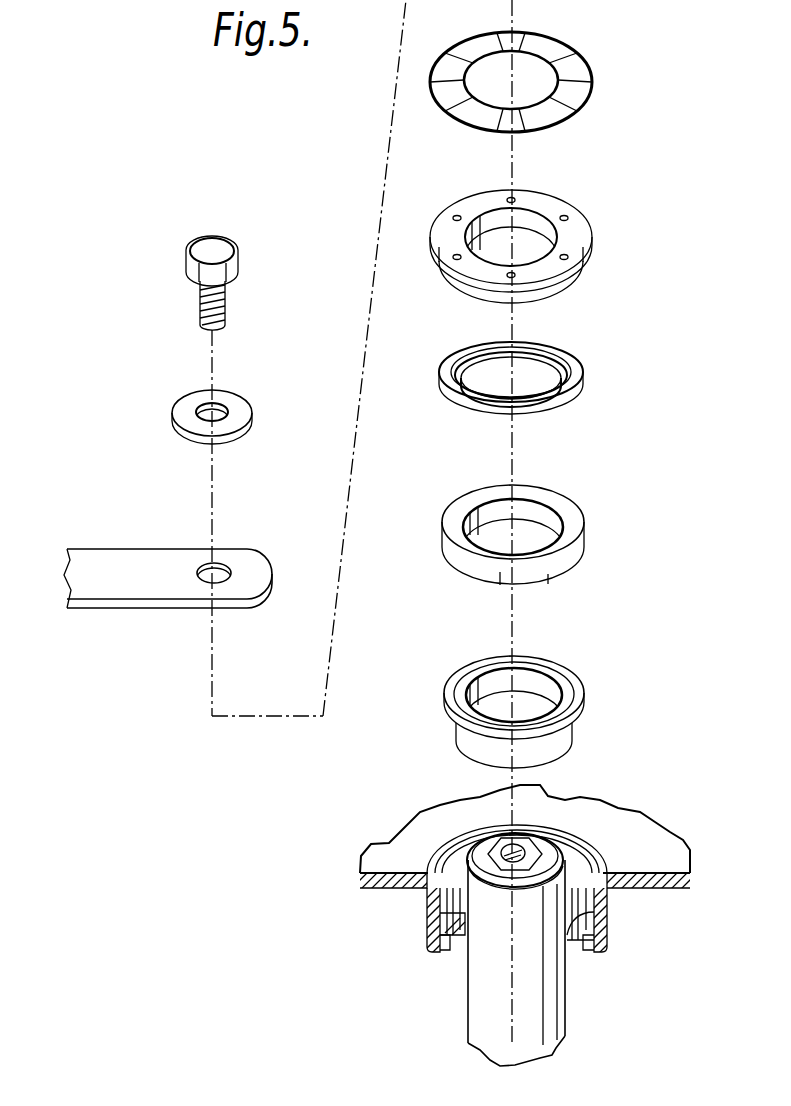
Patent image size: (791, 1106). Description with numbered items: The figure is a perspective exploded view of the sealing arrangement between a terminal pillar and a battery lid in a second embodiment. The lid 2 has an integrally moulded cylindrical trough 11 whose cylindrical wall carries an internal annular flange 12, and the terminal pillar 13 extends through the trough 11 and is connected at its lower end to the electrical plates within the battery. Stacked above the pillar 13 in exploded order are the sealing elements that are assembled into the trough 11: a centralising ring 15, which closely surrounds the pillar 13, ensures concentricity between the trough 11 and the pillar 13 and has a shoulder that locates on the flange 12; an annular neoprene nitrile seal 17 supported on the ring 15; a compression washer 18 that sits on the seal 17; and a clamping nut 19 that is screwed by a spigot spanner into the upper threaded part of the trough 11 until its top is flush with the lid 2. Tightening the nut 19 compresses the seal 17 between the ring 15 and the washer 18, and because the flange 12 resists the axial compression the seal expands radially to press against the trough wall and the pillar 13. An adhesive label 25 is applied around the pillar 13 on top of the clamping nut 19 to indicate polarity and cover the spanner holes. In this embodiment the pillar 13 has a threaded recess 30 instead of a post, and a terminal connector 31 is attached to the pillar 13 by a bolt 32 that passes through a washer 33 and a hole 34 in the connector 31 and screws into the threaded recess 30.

The lid 2 is at (413, 833).
The cylindrical trough 11 is at (427, 933).
The annular flange 12 is at (450, 947).
The terminal pillar 13 is at (556, 1013).
The centralising ring 15 is at (583, 712).
The annular neoprene nitrile seal 17 is at (585, 548).
The compression washer 18 is at (583, 392).
The clamping nut 19 is at (593, 238).
The adhesive label 25 is at (586, 70).
The threaded recess 30 is at (522, 852).
The terminal connector 31 is at (268, 596).
The bolt 32 is at (240, 264).
The washer 33 is at (243, 407).
The hole 34 is at (223, 566).